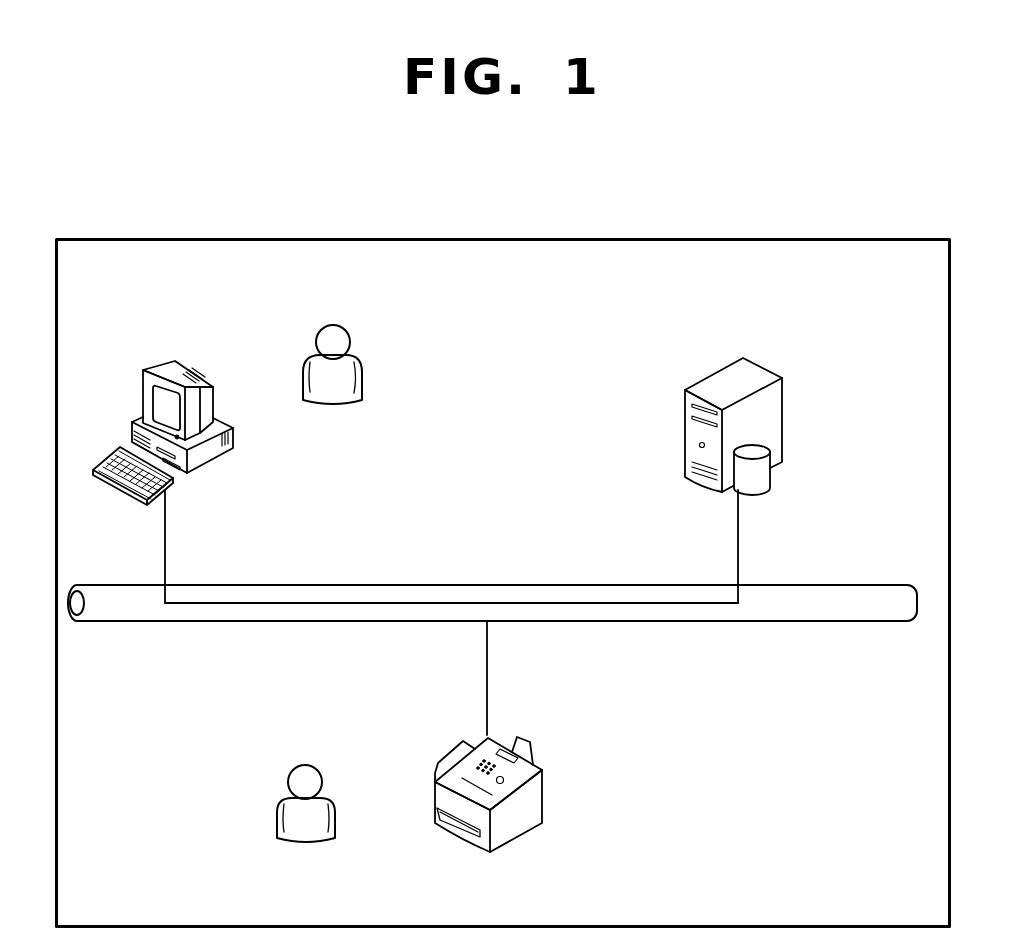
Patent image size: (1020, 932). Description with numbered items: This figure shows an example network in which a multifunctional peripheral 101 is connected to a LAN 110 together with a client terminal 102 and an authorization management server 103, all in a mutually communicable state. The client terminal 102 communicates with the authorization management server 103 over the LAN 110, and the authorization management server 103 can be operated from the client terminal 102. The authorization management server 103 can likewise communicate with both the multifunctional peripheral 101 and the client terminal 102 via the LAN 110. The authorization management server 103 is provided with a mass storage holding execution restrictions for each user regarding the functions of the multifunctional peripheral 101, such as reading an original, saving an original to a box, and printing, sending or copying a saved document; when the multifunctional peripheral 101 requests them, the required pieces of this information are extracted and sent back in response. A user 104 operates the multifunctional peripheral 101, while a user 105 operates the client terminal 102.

The multifunctional peripheral 101 is at (517, 838).
The client terminal 102 is at (177, 362).
The authorization management server 103 is at (718, 370).
The user of the multifunctional peripheral 104 is at (303, 843).
The user of the client terminal 105 is at (362, 372).
The LAN 110 is at (856, 603).